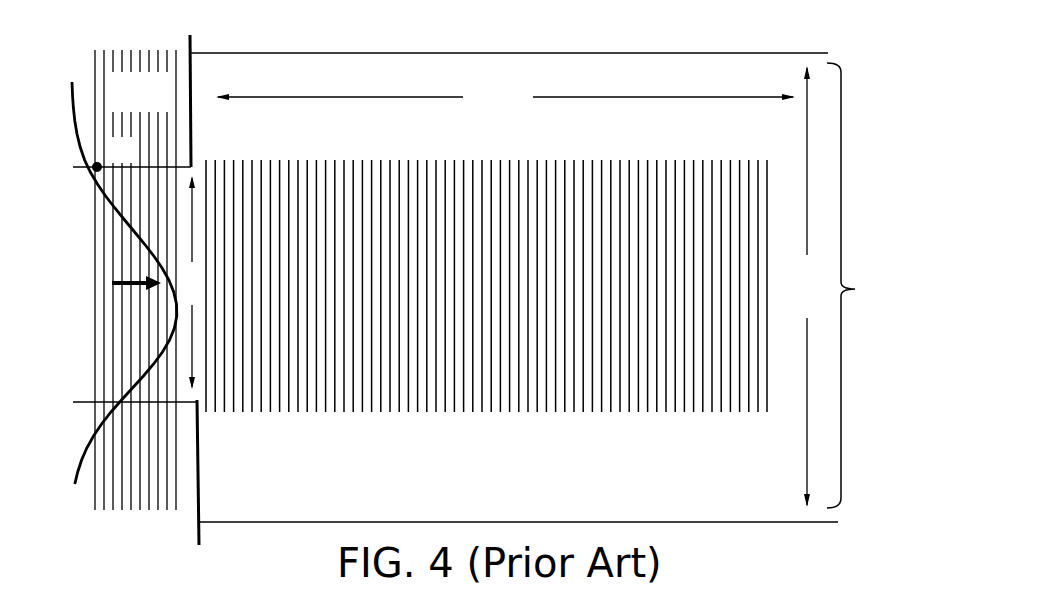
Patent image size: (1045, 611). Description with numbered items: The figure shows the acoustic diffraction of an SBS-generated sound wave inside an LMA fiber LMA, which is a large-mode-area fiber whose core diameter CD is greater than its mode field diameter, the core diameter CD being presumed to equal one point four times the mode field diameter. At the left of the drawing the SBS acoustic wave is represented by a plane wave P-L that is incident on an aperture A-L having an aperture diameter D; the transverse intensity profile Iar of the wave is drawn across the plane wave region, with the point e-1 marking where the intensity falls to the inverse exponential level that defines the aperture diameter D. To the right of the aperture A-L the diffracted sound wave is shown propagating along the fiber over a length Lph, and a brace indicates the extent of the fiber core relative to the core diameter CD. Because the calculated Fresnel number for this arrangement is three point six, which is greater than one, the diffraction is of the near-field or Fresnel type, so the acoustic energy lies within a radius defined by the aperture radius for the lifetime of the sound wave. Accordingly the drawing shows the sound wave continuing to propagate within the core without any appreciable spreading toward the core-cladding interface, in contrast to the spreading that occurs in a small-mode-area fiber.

The plane wave P-L is at (95, 365).
The LMA fiber LMA is at (455, 290).
The intensity profile I_ar(r) Iar is at (124, 279).
The e^-1 intensity point e-1 is at (113, 152).
The aperture diameter D is at (192, 282).
The aperture A-L is at (193, 175).
The grating length L_ph Lph is at (505, 104).
The core diameter CD is at (806, 286).
The element core is at (869, 285).